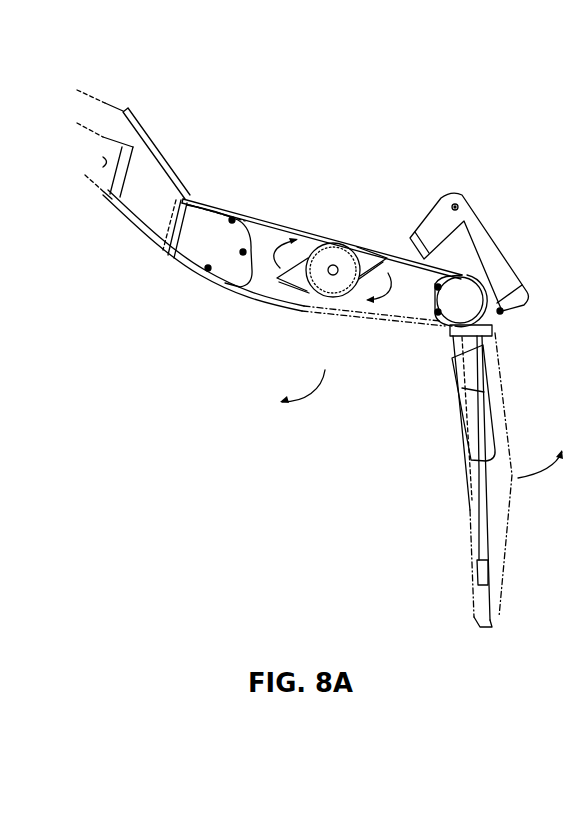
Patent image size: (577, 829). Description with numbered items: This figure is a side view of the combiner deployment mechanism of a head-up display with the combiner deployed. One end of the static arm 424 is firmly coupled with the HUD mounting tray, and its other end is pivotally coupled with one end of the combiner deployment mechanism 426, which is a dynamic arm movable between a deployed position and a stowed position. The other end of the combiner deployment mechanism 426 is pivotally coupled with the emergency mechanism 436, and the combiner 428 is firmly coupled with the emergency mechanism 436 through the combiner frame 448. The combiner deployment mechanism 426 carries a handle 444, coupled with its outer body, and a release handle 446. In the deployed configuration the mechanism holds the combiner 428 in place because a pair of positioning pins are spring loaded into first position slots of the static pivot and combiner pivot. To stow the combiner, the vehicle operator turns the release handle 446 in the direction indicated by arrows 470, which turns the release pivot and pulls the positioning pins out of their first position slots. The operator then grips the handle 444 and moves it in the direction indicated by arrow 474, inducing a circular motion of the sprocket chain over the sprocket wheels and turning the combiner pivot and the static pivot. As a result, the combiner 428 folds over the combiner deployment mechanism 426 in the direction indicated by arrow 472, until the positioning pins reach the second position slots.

The static arm 424 is at (117, 126).
The combiner deployment mechanism 426 is at (285, 150).
The combiner 428 is at (472, 522).
The emergency mechanism 436 is at (453, 237).
The handle 444 is at (332, 285).
The release handle 446 is at (373, 255).
The combiner frame 448 is at (478, 418).
The arrows 470 is at (280, 235).
The arrow 472 is at (513, 472).
The arrow 474 is at (294, 407).